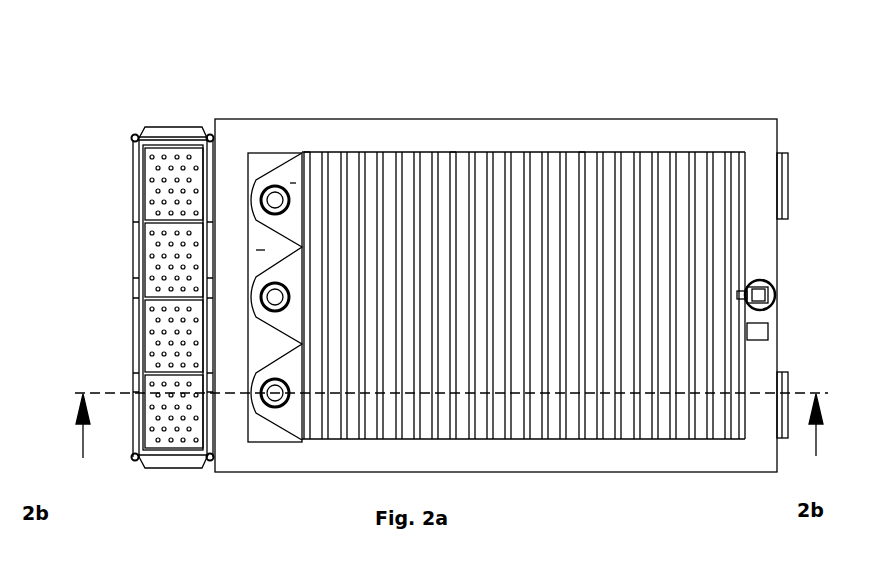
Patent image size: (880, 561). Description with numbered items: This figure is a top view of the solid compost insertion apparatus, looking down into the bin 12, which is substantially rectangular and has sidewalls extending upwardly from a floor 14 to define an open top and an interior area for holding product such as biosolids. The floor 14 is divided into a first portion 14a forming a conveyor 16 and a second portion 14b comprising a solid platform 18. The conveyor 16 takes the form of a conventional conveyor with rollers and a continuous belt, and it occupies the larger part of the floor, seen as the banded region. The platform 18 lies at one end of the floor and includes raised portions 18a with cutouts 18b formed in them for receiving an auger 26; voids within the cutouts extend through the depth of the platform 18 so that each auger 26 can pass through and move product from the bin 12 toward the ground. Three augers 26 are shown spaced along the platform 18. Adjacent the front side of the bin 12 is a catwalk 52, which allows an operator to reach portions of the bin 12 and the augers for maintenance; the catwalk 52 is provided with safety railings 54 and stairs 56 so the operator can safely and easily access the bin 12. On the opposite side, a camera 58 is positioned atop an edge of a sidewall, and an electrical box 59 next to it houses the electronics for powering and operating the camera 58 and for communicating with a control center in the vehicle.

The bin 12 is at (724, 120).
The floor 14 is at (513, 153).
The first portion 14a is at (586, 138).
The second portion 14b is at (267, 138).
The conveyor 16 is at (450, 172).
The solid platform 18 is at (290, 420).
The raised portions 18a is at (265, 250).
The cutout 18b is at (300, 172).
The auger 26 is at (270, 407).
The catwalk 52 is at (140, 261).
The safety railings 54 is at (135, 259).
The stairs 56 is at (170, 126).
The camera 58 is at (758, 280).
The electrical box 59 is at (768, 328).